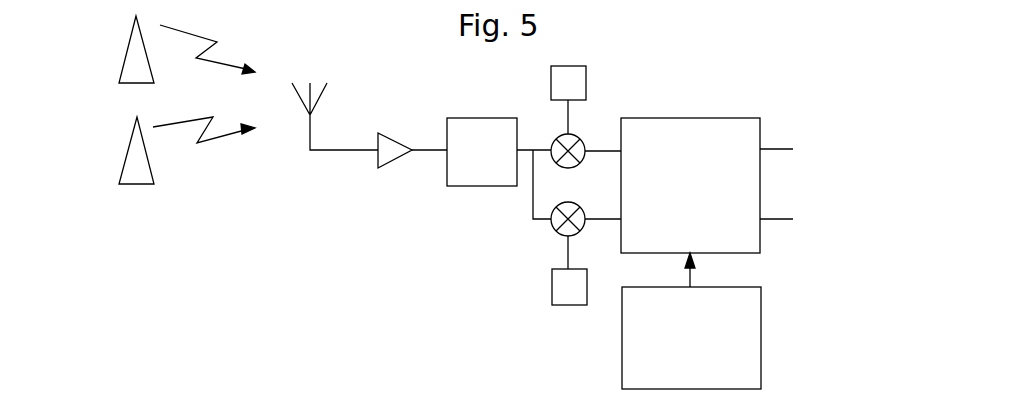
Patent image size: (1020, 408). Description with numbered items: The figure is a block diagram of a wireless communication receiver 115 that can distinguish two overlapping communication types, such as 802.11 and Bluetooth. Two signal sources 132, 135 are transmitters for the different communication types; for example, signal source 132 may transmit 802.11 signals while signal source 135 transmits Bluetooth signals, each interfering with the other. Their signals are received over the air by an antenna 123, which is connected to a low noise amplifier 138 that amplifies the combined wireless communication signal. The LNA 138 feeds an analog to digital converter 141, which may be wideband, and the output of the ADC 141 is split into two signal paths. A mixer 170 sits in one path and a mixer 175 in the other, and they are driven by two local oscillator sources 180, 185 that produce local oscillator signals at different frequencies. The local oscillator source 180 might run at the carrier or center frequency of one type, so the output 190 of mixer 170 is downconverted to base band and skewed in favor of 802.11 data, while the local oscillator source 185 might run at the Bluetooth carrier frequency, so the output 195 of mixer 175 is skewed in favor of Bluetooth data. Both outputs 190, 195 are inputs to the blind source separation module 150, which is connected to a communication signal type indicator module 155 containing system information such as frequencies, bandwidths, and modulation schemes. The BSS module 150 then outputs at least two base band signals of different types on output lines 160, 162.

The wireless communication receiver 115 is at (627, 50).
The antenna 123 is at (322, 92).
The signal source 132 is at (120, 76).
The signal source 135 is at (120, 170).
The low noise amplifier 138 is at (397, 163).
The analog to digital converter 141 is at (474, 187).
The BSS module 150 is at (655, 118).
The communication signal type indicator module 155 is at (761, 320).
The output line 160 is at (786, 149).
The output line 162 is at (787, 219).
The mixer 170 is at (574, 134).
The mixer 175 is at (560, 236).
The local oscillator source 180 is at (551, 86).
The local oscillator source 185 is at (568, 306).
The output of mixer 170 190 is at (600, 152).
The output of mixer 175 195 is at (600, 221).